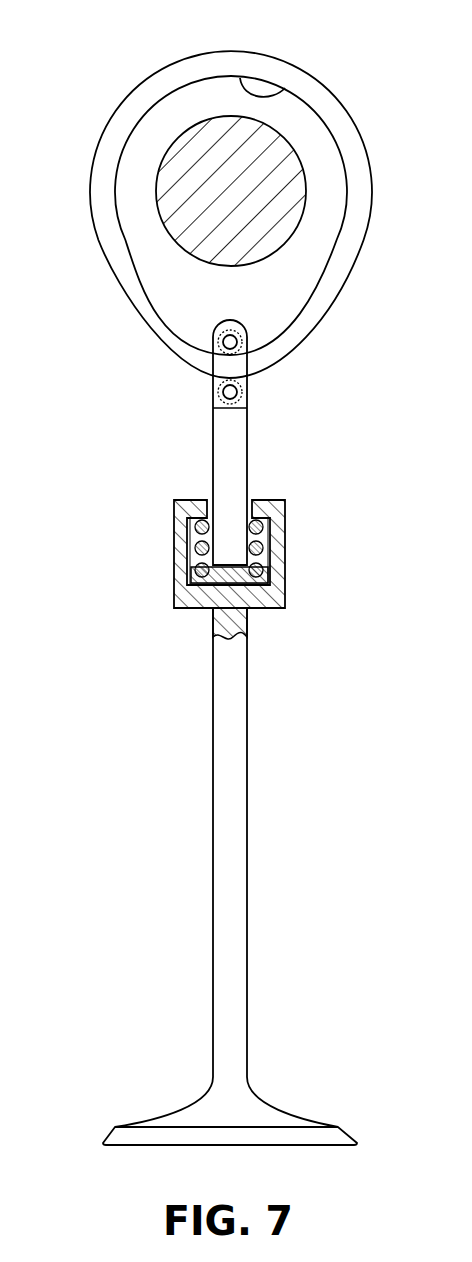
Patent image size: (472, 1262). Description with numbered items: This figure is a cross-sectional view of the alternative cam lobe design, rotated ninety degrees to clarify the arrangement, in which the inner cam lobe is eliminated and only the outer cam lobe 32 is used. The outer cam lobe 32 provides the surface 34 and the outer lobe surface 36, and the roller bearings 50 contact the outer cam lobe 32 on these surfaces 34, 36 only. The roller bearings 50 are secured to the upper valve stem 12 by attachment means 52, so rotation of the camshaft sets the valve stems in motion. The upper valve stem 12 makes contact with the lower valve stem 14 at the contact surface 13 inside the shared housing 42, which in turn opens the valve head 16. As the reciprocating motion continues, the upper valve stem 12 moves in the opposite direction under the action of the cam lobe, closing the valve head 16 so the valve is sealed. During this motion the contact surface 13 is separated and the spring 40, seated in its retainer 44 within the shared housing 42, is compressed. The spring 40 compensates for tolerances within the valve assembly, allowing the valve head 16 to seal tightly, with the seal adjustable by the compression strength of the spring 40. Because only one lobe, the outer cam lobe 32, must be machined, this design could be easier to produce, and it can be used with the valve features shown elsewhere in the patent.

The upper valve stem 12 is at (220, 448).
The contact surface 13 is at (228, 598).
The lower valve stem 14 is at (238, 780).
The valve head 16 is at (277, 1115).
The outer cam lobe 32 is at (204, 212).
The surface 34 is at (115, 275).
The outer lobe surface 36 is at (275, 95).
The spring 40 is at (208, 522).
The shared housing 42 is at (292, 553).
The retainer 44 is at (215, 585).
The roller bearings 50 is at (217, 340).
The attachment means 52 is at (218, 394).